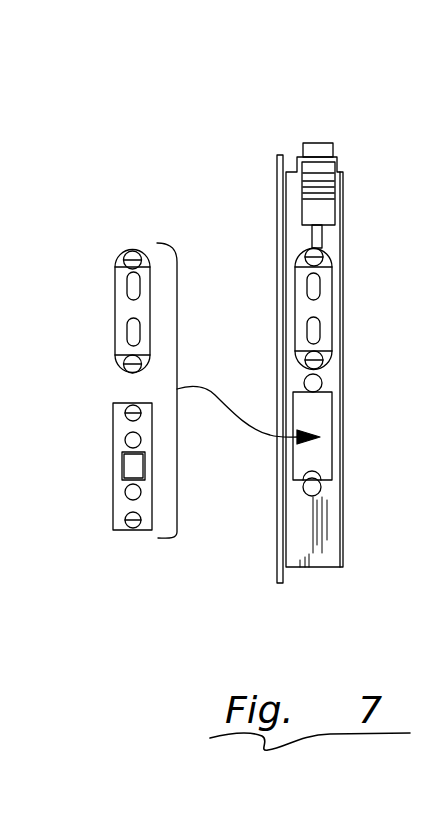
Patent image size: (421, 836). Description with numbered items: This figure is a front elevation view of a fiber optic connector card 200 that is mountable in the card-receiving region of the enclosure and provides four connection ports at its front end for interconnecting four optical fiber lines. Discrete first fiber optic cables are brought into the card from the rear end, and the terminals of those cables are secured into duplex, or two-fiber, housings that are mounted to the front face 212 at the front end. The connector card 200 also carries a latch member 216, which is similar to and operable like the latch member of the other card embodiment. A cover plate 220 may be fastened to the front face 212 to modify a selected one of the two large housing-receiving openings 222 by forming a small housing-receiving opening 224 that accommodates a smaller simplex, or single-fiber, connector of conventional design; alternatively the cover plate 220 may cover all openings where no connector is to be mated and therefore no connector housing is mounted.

The fiber optic connector card 200 is at (320, 112).
The front face 212 is at (338, 518).
The latch member 216 is at (320, 207).
The cover plate 220 is at (124, 444).
The large housing-receiving opening 222 is at (302, 481).
The small housing-receiving opening 224 is at (125, 494).